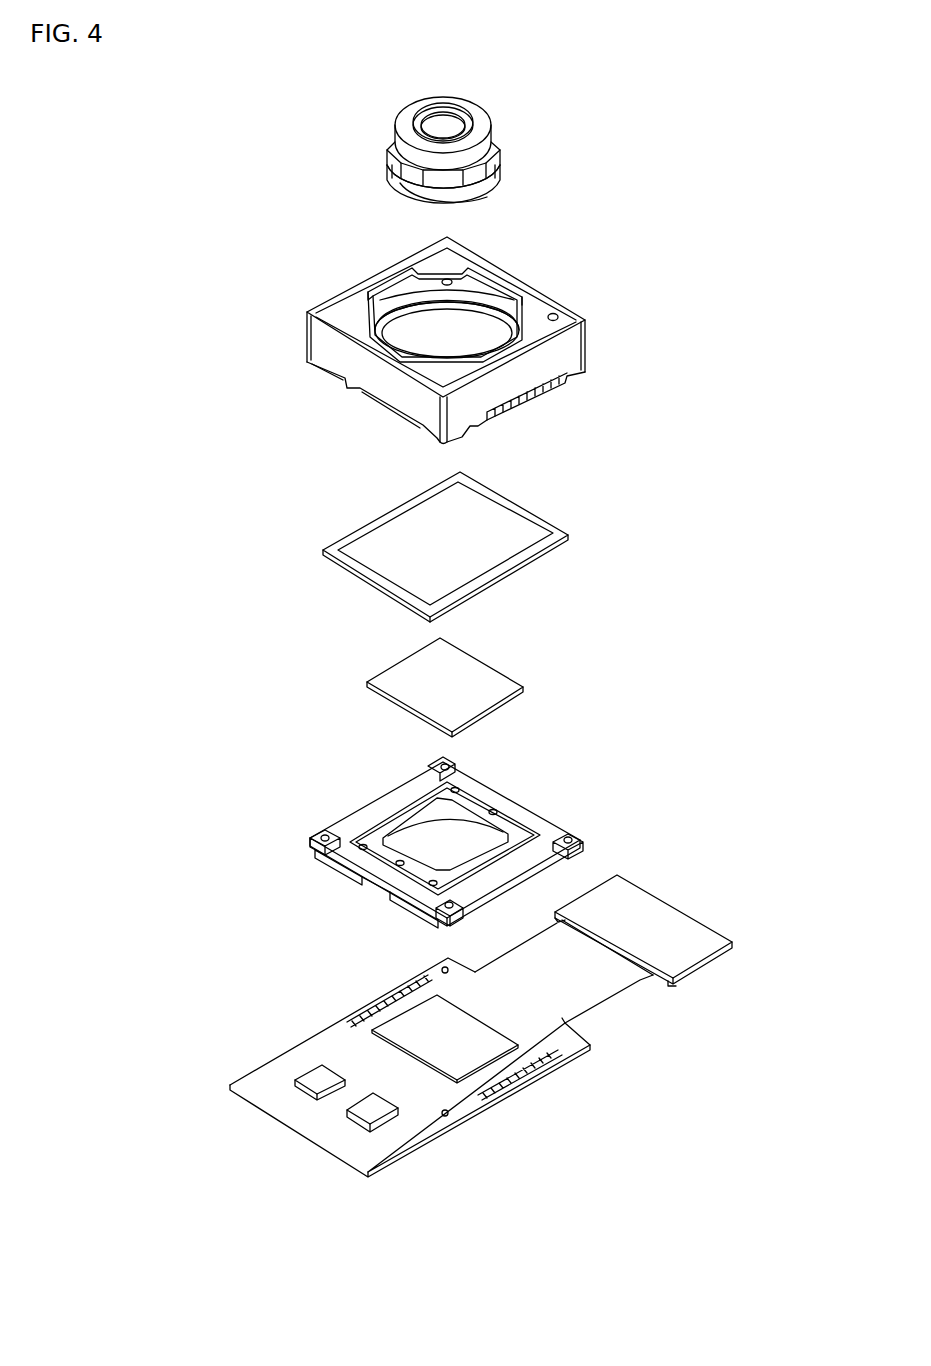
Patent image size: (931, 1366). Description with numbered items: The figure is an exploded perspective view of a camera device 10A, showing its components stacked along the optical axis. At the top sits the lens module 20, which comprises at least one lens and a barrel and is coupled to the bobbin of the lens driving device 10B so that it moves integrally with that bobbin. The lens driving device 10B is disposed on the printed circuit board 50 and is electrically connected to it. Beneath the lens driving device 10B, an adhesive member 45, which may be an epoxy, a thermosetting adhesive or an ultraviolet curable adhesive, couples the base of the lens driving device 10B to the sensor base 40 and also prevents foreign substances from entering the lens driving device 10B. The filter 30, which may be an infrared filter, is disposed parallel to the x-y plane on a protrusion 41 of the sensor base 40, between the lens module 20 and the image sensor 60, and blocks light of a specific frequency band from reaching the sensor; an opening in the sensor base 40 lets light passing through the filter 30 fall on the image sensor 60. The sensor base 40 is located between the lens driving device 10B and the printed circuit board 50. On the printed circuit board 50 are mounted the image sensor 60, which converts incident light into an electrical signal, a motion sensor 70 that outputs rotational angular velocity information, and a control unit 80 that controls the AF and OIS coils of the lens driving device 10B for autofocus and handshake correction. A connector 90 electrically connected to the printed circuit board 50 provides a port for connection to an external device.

The camera device 10A is at (697, 245).
The lens driving device 10B is at (562, 357).
The lens module 20 is at (497, 170).
The filter 30 is at (507, 687).
The sensor base 40 is at (451, 842).
The protrusion 41 is at (388, 817).
The adhesive member 45 is at (555, 528).
The printed circuit board 50 is at (270, 1113).
The image sensor 60 is at (427, 1015).
The motion sensor 70 is at (317, 1073).
The control unit 80 is at (377, 1113).
The connector 90 is at (685, 932).